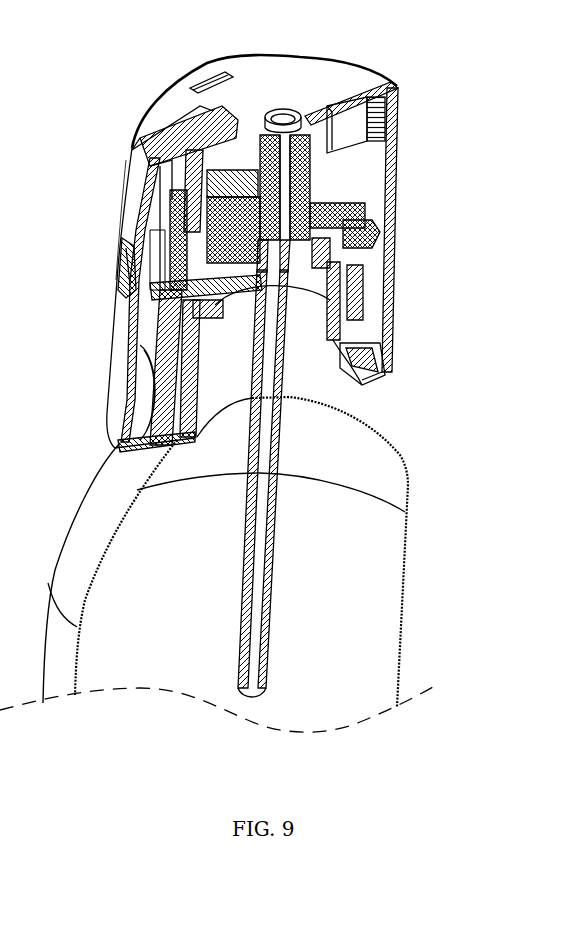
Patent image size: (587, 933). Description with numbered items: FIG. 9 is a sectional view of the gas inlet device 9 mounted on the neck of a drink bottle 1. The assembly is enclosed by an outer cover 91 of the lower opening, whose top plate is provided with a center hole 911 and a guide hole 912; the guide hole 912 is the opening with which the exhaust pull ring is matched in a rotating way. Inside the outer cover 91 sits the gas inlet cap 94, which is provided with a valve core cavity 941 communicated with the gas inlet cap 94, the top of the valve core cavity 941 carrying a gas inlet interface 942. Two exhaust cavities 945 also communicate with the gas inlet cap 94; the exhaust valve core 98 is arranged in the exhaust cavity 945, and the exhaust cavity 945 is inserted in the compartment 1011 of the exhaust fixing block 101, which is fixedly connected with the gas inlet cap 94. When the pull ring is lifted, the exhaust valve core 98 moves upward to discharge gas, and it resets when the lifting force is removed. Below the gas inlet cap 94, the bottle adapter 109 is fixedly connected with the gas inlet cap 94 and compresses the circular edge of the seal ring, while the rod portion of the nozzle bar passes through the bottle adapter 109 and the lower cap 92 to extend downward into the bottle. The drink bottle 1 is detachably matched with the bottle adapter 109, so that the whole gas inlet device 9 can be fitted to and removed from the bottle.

The drink bottle 1 is at (117, 677).
The gas inlet device 9 is at (430, 197).
The outer cover 91 is at (393, 313).
The lower cap 92 is at (370, 366).
The gas inlet cap 94 is at (368, 225).
The valve core cavity 941 is at (333, 207).
The gas inlet interface 942 is at (307, 158).
The exhaust cavity 945 is at (122, 254).
The exhaust valve core 98 is at (185, 240).
The exhaust fixing block 101 is at (172, 196).
The compartment 1011 is at (178, 232).
The bottle adapter 109 is at (175, 395).
The center hole 911 is at (281, 123).
The guide hole 912 is at (183, 117).